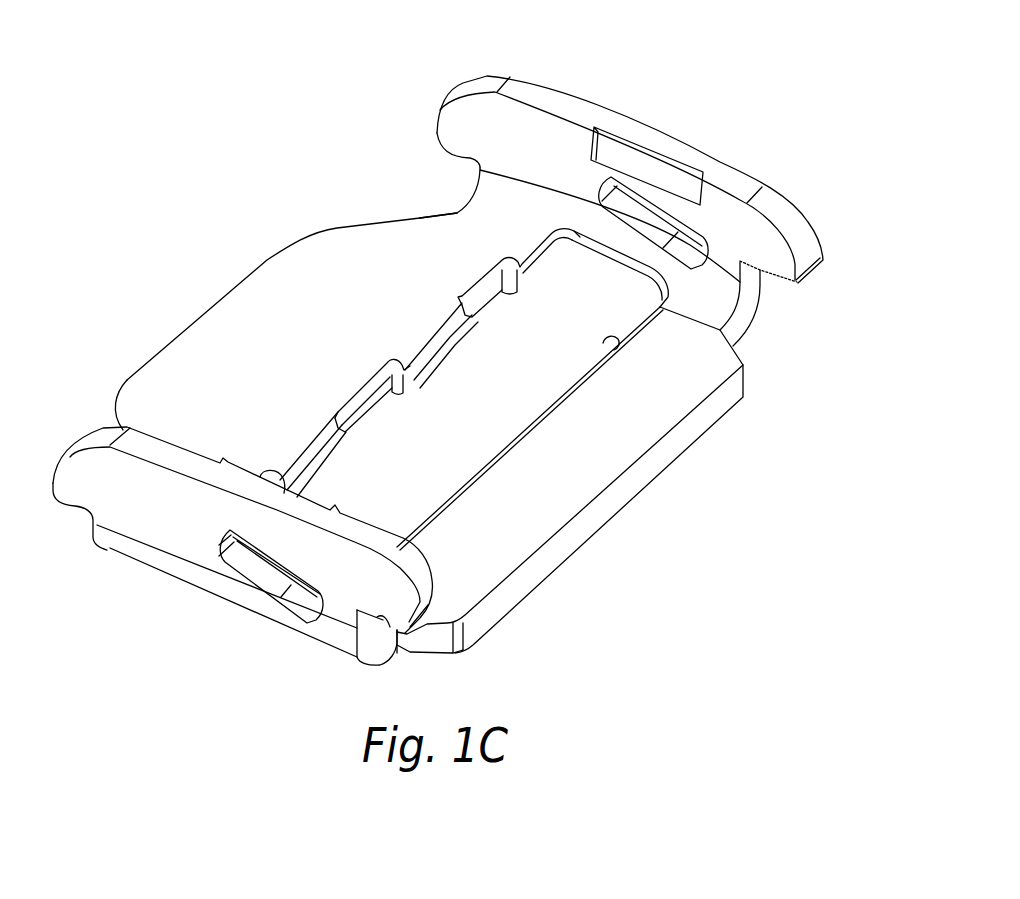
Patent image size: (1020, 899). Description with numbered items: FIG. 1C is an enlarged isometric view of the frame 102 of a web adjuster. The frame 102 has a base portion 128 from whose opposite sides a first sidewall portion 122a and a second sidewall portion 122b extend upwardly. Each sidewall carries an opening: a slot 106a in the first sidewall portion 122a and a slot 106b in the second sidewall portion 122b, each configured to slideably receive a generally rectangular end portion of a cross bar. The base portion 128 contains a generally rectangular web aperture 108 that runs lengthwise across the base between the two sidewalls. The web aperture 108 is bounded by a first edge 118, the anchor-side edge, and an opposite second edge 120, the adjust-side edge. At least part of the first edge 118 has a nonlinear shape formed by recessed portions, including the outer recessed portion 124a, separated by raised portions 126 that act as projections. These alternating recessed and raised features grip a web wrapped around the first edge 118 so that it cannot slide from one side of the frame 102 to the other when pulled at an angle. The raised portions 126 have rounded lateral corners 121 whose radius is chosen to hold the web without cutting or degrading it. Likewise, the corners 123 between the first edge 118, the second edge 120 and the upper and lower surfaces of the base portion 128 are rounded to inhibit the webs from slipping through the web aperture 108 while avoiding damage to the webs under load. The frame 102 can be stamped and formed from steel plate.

The frame 102 is at (158, 215).
The slot 106a is at (265, 572).
The slot 106b is at (647, 218).
The web aperture 108 is at (520, 405).
The first edge 118 is at (430, 368).
The second edge 120 is at (436, 509).
The lateral corners 121 is at (460, 302).
The first sidewall portion 122a is at (150, 438).
The second sidewall portion 122b is at (550, 100).
The corners 123 is at (355, 395).
The outer recessed portion 124a is at (490, 298).
The raised portions 126 is at (320, 462).
The base portion 128 is at (340, 235).